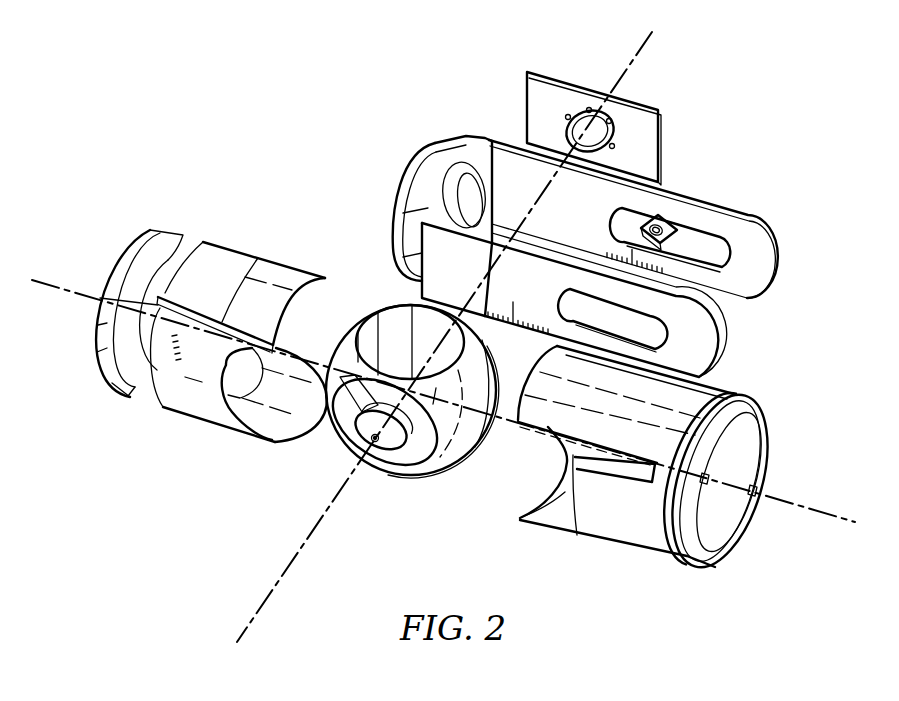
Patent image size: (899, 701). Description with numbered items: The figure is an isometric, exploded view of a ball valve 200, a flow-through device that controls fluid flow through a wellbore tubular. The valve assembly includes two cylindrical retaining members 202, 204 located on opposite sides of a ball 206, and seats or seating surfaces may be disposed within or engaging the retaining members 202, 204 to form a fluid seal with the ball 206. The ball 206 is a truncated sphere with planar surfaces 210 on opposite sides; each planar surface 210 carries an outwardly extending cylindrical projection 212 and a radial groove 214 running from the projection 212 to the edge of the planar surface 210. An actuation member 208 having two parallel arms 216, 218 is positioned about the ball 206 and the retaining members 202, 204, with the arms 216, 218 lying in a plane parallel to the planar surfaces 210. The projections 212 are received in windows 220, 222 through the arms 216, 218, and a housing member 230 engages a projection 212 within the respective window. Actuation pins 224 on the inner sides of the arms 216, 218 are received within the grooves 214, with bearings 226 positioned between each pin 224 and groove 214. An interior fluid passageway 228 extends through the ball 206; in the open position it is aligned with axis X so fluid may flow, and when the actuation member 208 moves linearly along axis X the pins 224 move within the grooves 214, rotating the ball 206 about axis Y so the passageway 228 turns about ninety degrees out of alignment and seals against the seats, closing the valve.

The ball valve 200 is at (297, 149).
The cylindrical retaining member 202 is at (207, 407).
The cylindrical retaining member 204 is at (630, 537).
The ball 206 is at (443, 460).
The actuation member 208 is at (485, 138).
The planar surface 210 is at (350, 440).
The projection 212 is at (382, 450).
The radial groove 214 is at (333, 430).
The arm 216 is at (710, 357).
The arm 218 is at (727, 210).
The window 220 is at (567, 300).
The window 222 is at (697, 250).
The actuation pin 224 is at (673, 217).
The bearing 226 is at (618, 215).
The interior fluid passageway 228 is at (392, 322).
The housing member 230 is at (567, 83).